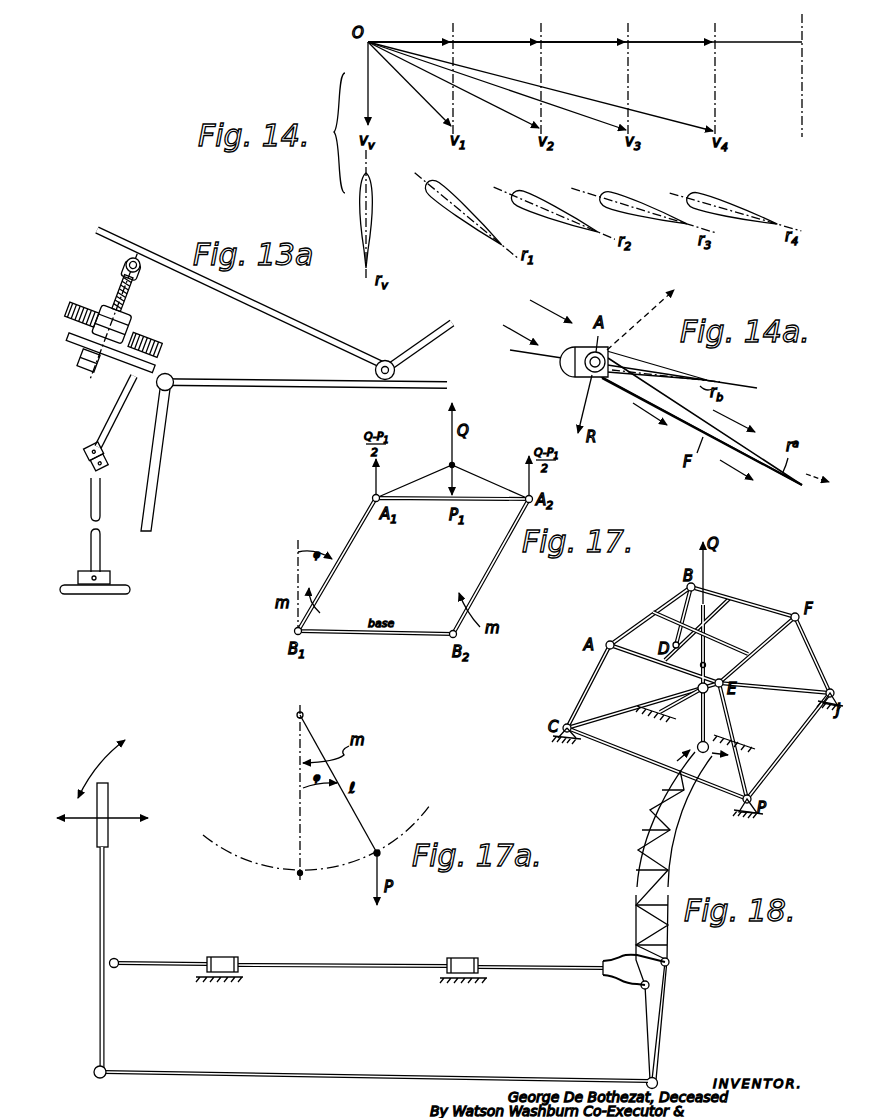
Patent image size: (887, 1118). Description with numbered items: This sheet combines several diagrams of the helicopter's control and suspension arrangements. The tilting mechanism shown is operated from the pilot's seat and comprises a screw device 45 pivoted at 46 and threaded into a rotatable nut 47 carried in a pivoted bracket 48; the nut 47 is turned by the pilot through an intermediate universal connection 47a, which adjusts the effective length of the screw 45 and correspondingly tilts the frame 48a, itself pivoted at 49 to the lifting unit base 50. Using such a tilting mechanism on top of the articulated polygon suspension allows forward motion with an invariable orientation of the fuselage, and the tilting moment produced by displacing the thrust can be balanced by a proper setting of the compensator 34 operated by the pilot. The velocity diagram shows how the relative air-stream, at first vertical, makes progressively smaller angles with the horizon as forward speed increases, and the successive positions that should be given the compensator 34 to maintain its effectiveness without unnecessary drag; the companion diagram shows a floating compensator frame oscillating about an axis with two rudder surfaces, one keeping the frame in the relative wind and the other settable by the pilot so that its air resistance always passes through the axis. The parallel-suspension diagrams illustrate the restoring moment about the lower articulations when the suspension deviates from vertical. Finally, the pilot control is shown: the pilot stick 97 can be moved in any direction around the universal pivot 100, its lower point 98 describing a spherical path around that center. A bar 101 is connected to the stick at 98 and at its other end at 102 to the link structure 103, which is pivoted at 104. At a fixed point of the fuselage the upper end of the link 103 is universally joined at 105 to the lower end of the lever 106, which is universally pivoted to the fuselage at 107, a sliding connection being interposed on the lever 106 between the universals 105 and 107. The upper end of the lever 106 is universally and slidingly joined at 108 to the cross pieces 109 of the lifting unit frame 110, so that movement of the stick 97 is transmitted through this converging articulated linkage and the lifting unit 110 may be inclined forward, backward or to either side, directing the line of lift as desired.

In FIG. 14, the compensator 34 is at (358, 212).
In FIG. 13A, the screw device 45 is at (100, 277).
In FIG. 13A, the pivot 46 is at (144, 238).
In FIG. 13A, the rotatable nut 47 is at (143, 315).
In FIG. 13A, the universal connection 47a is at (88, 514).
In FIG. 13A, the pivoted bracket 48 is at (102, 361).
In FIG. 13A, the frame 48a is at (246, 301).
In FIG. 13A, the pivot 49 is at (400, 374).
In FIG. 13A, the lifting unit base 50 is at (272, 389).
In FIG. 18, the pilot stick 97 is at (97, 838).
In FIG. 18, the lower point 98 is at (95, 1070).
In FIG. 18, the universal pivot 100 is at (113, 958).
In FIG. 18, the bar 101 is at (379, 1068).
In FIG. 18, the connection 102 is at (657, 1079).
In FIG. 18, the link structure 103 is at (630, 884).
In FIG. 18, the pivot 104 is at (670, 962).
In FIG. 18, the universal joint 105 is at (697, 749).
In FIG. 18, the lever 106 is at (712, 667).
In FIG. 18, the universal pivot 107 is at (697, 688).
In FIG. 18, the universal sliding joint 108 is at (724, 597).
In FIG. 18, the cross pieces 109 is at (655, 628).
In FIG. 18, the lifting unit frame 110 is at (668, 604).